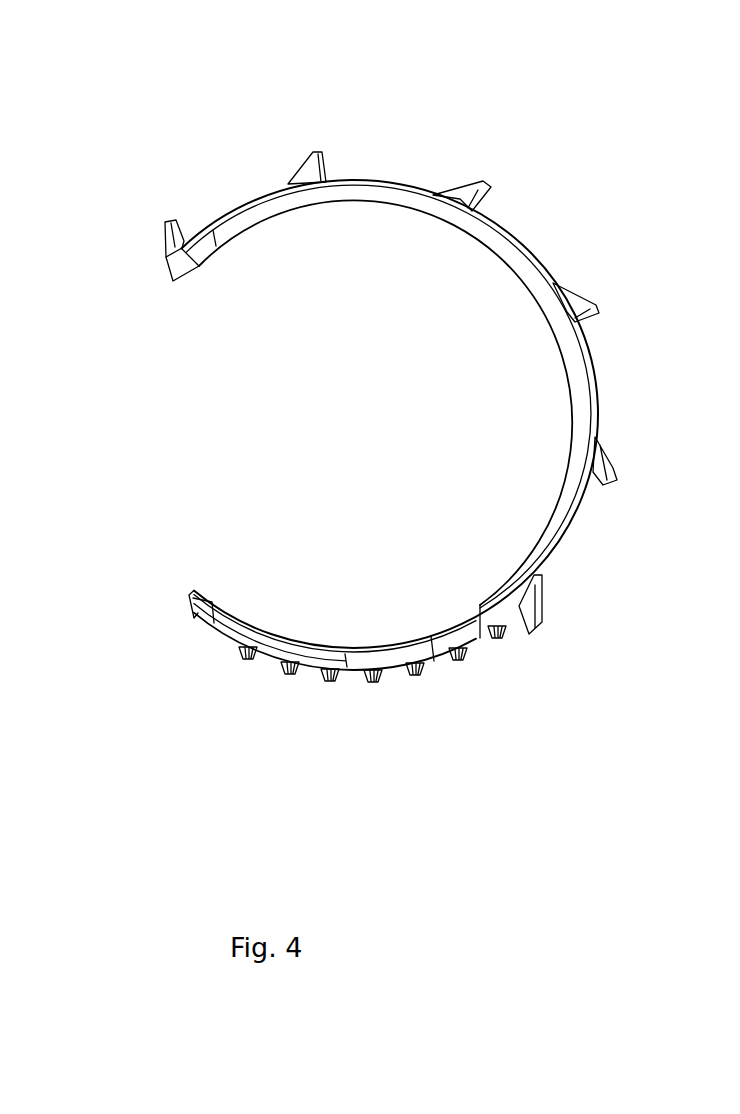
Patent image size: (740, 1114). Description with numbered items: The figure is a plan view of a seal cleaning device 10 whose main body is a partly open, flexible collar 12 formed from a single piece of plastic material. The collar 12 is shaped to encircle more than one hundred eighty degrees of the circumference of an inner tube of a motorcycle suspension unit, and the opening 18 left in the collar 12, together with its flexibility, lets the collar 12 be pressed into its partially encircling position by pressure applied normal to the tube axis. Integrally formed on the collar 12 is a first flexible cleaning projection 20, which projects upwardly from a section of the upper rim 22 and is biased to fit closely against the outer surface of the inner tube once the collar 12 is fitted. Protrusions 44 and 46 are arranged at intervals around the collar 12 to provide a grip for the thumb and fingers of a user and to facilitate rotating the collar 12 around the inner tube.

The seal cleaning device 10 is at (583, 55).
The collar 12 is at (578, 406).
The opening 18 is at (142, 407).
The first flexible cleaning projection 20 is at (318, 650).
The upper rim 22 is at (467, 626).
The protrusions 44 is at (324, 154).
The protrusions 46 is at (275, 676).